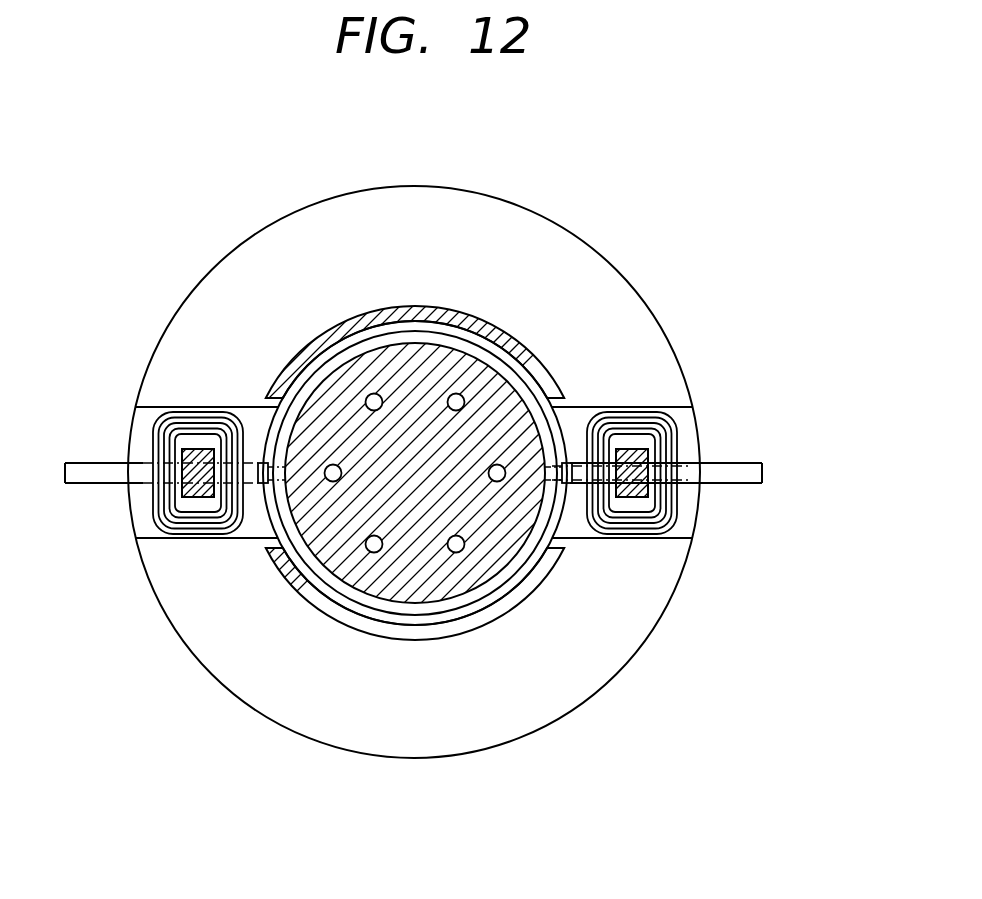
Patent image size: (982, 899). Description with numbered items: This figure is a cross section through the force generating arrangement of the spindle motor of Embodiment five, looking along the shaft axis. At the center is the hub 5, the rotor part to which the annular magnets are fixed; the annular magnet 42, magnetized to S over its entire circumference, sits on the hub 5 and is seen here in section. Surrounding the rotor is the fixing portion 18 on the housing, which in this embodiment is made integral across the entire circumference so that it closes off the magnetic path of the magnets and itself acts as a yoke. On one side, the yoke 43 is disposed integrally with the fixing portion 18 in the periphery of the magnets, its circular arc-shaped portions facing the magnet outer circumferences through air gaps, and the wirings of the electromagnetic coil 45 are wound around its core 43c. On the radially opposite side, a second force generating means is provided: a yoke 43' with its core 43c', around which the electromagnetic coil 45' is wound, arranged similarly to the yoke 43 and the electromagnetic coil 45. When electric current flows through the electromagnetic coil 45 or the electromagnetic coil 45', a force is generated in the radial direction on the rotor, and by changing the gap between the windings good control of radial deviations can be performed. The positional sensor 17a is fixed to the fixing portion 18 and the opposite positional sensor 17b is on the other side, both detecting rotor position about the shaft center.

The hub 5 is at (398, 385).
The fixing portion 18 is at (552, 265).
The annular magnet 42 is at (488, 590).
The yoke 43 is at (627, 386).
The yoke 43' is at (207, 360).
The core 43c is at (659, 402).
The core 43c' is at (146, 494).
The electromagnetic coil 45 is at (708, 476).
The electromagnetic coil 45' is at (145, 511).
The positional sensor 17a is at (748, 474).
The positional sensor 17b is at (86, 462).